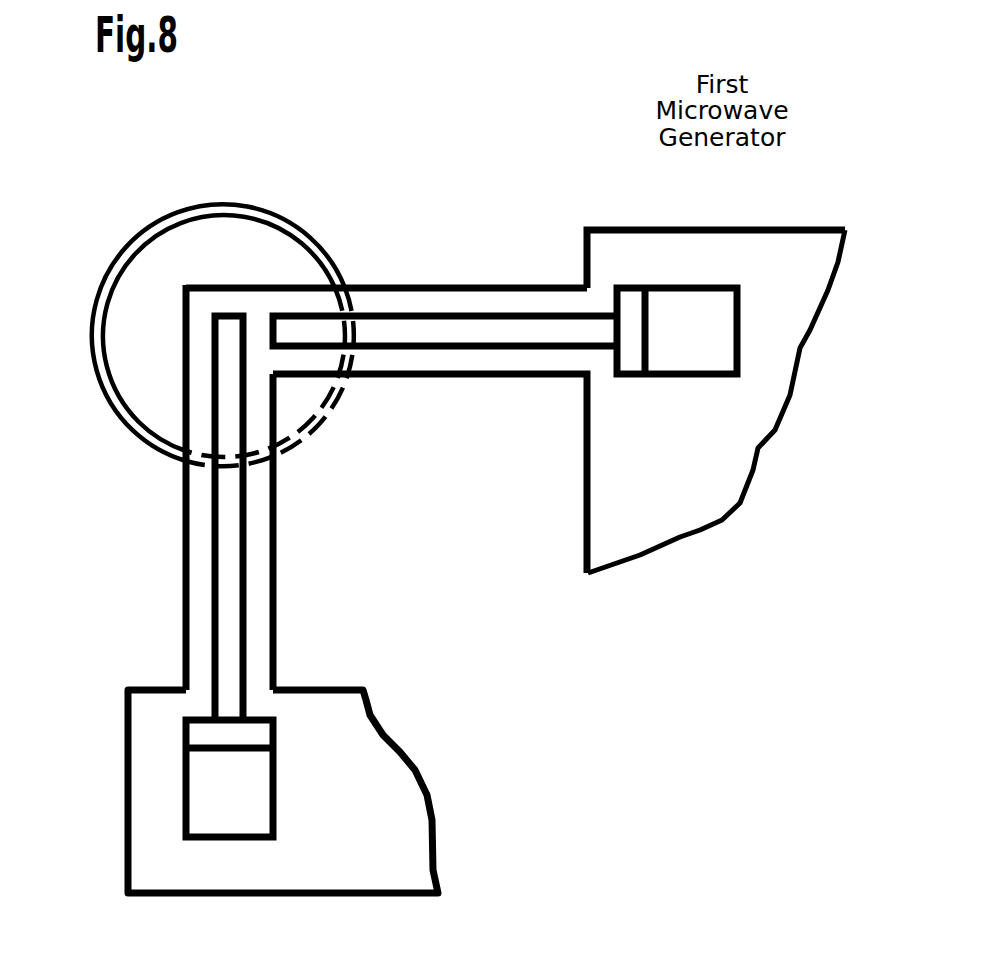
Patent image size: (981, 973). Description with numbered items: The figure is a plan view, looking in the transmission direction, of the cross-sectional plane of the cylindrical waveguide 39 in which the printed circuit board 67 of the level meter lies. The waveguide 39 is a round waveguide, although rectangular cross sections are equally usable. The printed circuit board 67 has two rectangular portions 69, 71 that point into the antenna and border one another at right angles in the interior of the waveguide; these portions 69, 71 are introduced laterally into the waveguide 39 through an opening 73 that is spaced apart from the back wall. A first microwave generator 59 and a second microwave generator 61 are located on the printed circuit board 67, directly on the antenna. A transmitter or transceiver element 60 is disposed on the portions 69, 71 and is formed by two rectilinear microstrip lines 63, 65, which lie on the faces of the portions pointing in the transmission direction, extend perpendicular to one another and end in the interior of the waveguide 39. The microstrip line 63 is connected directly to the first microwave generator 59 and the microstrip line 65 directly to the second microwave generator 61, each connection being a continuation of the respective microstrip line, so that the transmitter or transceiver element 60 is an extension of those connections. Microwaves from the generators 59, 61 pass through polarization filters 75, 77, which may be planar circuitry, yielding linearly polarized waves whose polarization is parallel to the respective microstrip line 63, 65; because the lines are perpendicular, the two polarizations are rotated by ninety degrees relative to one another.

The cylindrical waveguide 39 is at (201, 352).
The first microwave generator 59 is at (677, 262).
The transmitter or transceiver element 60 is at (222, 268).
The second microwave generator 61 is at (162, 731).
The microstrip line 63 is at (296, 322).
The microstrip line 65 is at (221, 365).
The printed circuit board 67 is at (333, 710).
The rectangular portion of the printed circuit board 69 is at (193, 503).
The rectangular portion of the printed circuit board 71 is at (420, 291).
The opening 73 is at (323, 421).
The polarization filter 75 is at (633, 296).
The polarization filter 77 is at (198, 733).